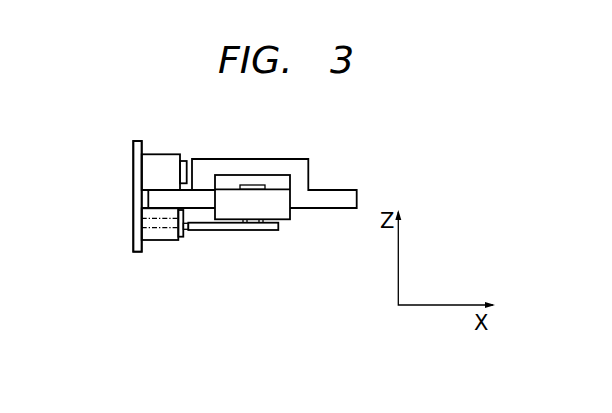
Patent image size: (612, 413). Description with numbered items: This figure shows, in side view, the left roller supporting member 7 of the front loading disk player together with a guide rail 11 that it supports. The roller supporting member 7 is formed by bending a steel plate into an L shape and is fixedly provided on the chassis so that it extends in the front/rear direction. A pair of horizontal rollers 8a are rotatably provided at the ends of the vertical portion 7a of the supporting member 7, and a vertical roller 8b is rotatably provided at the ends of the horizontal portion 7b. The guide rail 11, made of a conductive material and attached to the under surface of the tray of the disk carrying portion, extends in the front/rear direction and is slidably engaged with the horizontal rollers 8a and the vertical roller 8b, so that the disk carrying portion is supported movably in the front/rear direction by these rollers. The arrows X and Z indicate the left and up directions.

The roller supporting member 7 is at (125, 246).
The vertical portion 7a is at (133, 172).
The horizontal portion 7b is at (227, 230).
The horizontal rollers 8a is at (163, 160).
The vertical roller 8b is at (285, 214).
The guide rails 11 is at (337, 191).